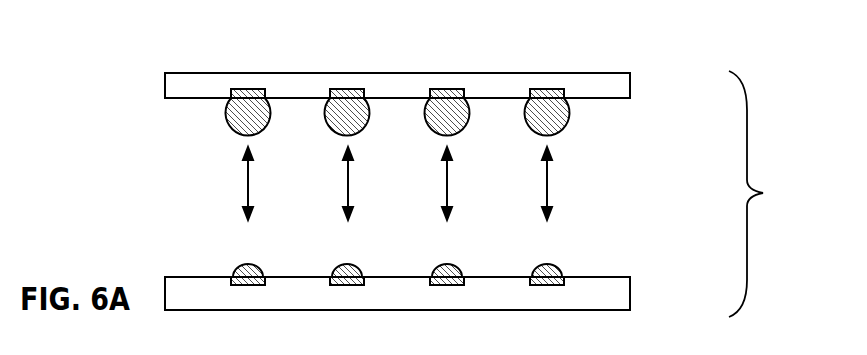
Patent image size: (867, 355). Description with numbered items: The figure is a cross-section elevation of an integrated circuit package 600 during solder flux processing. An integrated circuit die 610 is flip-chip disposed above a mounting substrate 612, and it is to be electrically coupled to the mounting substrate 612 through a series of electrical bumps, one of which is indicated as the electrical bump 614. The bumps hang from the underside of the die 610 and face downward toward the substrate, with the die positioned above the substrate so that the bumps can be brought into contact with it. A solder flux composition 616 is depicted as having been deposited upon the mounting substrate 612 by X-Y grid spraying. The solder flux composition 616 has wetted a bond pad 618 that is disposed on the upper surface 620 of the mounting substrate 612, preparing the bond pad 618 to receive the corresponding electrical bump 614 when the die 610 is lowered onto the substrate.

The integrated circuit package 600 is at (777, 194).
The integrated circuit die 610 is at (396, 83).
The electrical bump 614 is at (571, 118).
The mounting substrate 612 is at (631, 295).
The upper surface 620 is at (617, 277).
The solder flux composition 616 is at (548, 266).
The bond pad 618 is at (550, 285).